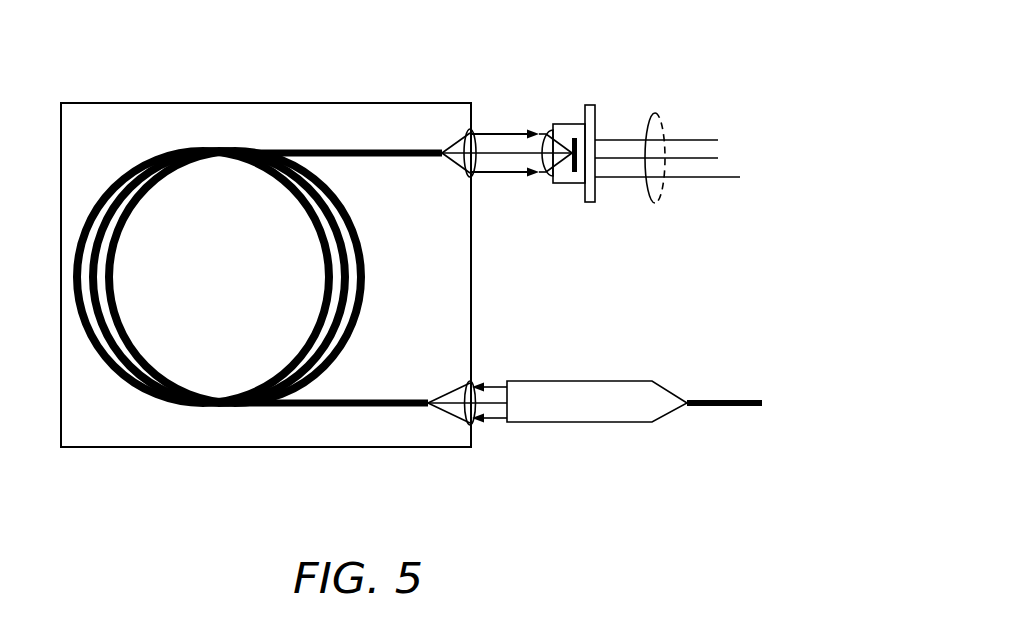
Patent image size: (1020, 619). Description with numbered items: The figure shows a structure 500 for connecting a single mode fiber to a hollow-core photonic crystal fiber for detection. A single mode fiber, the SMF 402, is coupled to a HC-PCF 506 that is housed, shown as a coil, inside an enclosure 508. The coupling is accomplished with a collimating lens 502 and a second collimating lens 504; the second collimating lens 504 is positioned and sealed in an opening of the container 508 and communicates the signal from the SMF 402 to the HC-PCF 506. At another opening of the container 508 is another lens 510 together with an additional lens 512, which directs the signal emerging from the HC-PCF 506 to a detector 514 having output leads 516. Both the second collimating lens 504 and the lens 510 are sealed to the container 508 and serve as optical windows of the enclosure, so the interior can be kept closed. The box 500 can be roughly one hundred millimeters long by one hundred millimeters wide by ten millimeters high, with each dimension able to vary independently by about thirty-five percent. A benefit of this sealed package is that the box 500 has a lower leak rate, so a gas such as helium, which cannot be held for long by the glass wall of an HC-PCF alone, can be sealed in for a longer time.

The structure 500 is at (226, 78).
The enclosure 508 is at (150, 448).
The HC-PCF 506 is at (222, 397).
The lens 510 is at (468, 128).
The additional lens 512 is at (545, 128).
The detector 514 is at (577, 124).
The output leads 516 is at (655, 116).
The second collimating lens 504 is at (462, 415).
The collimating lens 502 is at (578, 381).
The SMF 402 is at (738, 400).